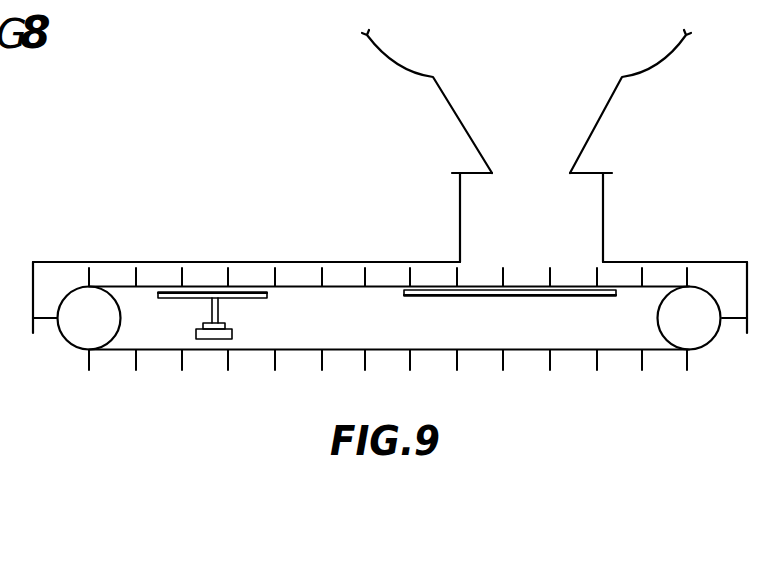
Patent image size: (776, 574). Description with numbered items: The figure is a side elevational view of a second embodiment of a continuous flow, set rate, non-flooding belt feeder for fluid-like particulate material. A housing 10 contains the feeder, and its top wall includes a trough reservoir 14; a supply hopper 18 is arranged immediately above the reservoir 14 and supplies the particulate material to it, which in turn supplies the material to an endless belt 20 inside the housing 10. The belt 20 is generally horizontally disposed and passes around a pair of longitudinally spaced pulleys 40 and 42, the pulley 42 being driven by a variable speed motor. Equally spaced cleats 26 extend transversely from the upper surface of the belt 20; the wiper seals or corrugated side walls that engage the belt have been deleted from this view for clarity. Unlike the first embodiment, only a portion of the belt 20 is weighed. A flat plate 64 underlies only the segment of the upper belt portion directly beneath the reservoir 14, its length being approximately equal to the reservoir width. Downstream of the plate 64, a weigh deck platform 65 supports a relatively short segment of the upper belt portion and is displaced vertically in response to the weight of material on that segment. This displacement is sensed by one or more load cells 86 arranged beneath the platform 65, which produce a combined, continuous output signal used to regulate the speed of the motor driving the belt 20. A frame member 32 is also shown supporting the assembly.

The housing 10 is at (390, 181).
The trough reservoir 14 is at (605, 199).
The supply hopper 18 is at (460, 125).
The endless belt 20 is at (382, 314).
The cleats 26 is at (275, 368).
The frame 32 is at (262, 262).
The pulley 40 is at (72, 335).
The pulley 42 is at (702, 333).
The flat plate 64 is at (538, 297).
The weigh deck platform 65 is at (269, 298).
The load cells 86 is at (233, 333).